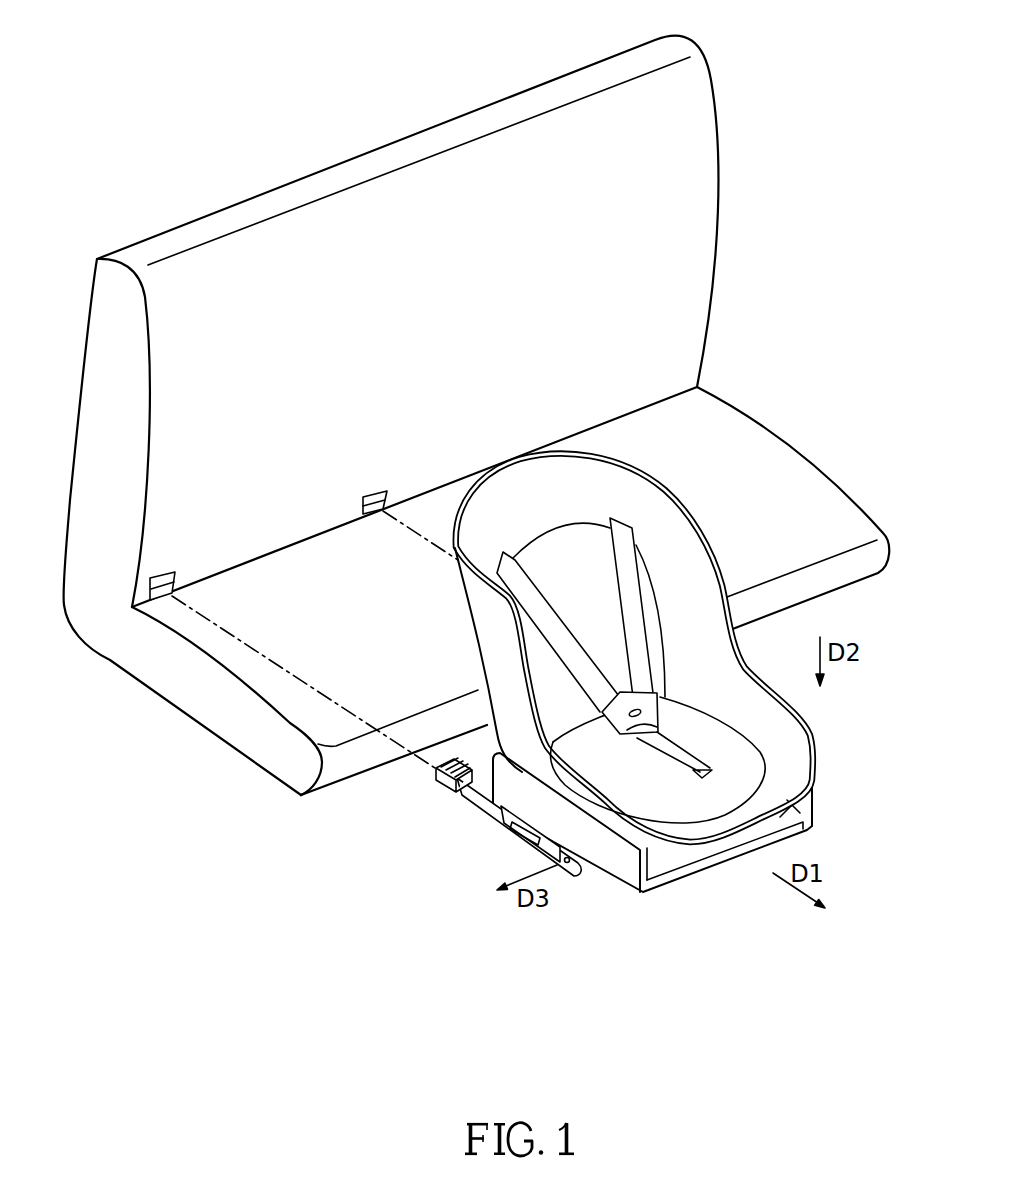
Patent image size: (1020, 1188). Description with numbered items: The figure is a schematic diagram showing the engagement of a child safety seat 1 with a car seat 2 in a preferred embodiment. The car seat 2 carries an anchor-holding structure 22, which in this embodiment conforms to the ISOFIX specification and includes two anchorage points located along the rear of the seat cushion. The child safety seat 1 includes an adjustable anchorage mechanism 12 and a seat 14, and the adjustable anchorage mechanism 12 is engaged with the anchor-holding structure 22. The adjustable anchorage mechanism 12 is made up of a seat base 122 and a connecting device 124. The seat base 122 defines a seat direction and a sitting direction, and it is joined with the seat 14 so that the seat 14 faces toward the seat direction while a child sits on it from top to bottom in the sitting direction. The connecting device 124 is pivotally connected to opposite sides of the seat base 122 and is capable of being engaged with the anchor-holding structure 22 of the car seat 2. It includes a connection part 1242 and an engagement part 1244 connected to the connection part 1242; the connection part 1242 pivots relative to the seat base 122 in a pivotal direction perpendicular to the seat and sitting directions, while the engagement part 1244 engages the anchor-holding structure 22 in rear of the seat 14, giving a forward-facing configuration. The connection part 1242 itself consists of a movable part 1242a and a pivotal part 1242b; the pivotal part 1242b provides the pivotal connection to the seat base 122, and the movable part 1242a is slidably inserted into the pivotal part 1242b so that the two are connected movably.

The child safety seat 1 is at (514, 775).
The adjustable anchorage mechanism 12 is at (483, 925).
The seat base 122 is at (540, 818).
The connecting device 124 is at (368, 897).
The connection part 1242 is at (417, 880).
The movable part 1242a is at (477, 802).
The pivotal part 1242b is at (518, 824).
The engagement part 1244 is at (453, 783).
The seat 14 is at (802, 748).
The car seat 2 is at (240, 213).
The anchor-holding structure 22 is at (164, 578).